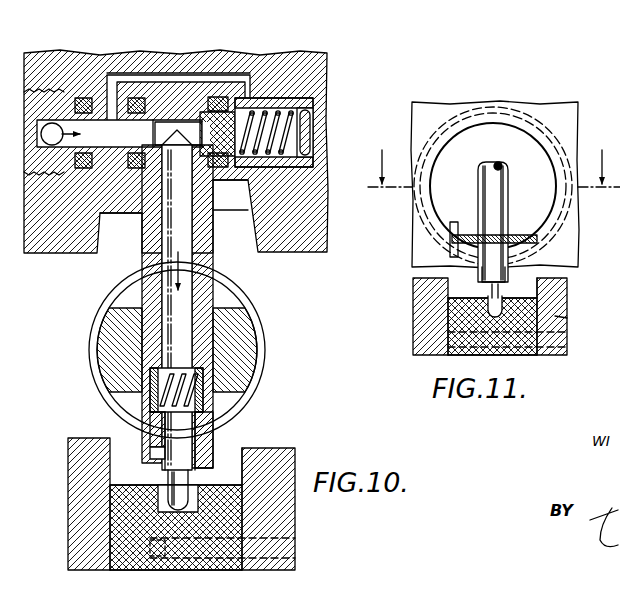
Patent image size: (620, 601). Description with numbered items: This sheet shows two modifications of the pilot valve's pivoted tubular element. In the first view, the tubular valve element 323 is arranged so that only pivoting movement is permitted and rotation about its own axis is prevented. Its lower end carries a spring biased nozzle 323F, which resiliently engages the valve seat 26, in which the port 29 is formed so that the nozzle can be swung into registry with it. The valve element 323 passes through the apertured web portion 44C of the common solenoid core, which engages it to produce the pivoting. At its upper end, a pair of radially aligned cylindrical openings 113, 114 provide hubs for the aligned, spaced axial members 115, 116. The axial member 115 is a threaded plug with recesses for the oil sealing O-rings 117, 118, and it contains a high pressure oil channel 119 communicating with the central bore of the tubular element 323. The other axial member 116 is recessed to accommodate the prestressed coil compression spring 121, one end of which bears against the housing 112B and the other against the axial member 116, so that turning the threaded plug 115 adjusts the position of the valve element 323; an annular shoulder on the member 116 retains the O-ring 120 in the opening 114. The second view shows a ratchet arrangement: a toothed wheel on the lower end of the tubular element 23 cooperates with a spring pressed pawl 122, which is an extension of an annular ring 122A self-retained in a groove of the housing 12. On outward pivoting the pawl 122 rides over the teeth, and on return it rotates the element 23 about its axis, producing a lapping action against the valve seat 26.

In FIG. 10, the housing 112B is at (312, 62).
In FIG. 10, the axial member 115 is at (109, 97).
In FIG. 10, the high pressure oil channel 119 is at (128, 132).
In FIG. 10, the oil sealing O-ring 117 is at (83, 98).
In FIG. 10, the oil sealing O-ring 118 is at (137, 98).
In FIG. 10, the cylindrical opening 113 is at (165, 100).
In FIG. 10, the cylindrical opening 114 is at (216, 97).
In FIG. 10, the O-ring 120 is at (222, 100).
In FIG. 10, the axial member 116 is at (263, 98).
In FIG. 10, the prestressed coil compression spring 121 is at (318, 122).
In FIG. 11, the prestressed coil compression spring 121 is at (527, 228).
In FIG. 10, the tubular valve element 323 is at (136, 259).
In FIG. 10, the apertured web portion 44C is at (238, 332).
In FIG. 10, the spring biased nozzle 323F is at (148, 455).
In FIG. 10, the valve seat 26 is at (240, 517).
In FIG. 11, the valve seat 26 is at (452, 338).
In FIG. 10, the port 29 is at (170, 494).
In FIG. 11, the port 29 is at (486, 305).
In FIG. 11, the annular ring 122A is at (468, 112).
In FIG. 11, the tubular element 23 is at (508, 160).
In FIG. 11, the spring pressed pawl 122 is at (467, 220).
In FIG. 11, the housing 12 is at (598, 282).